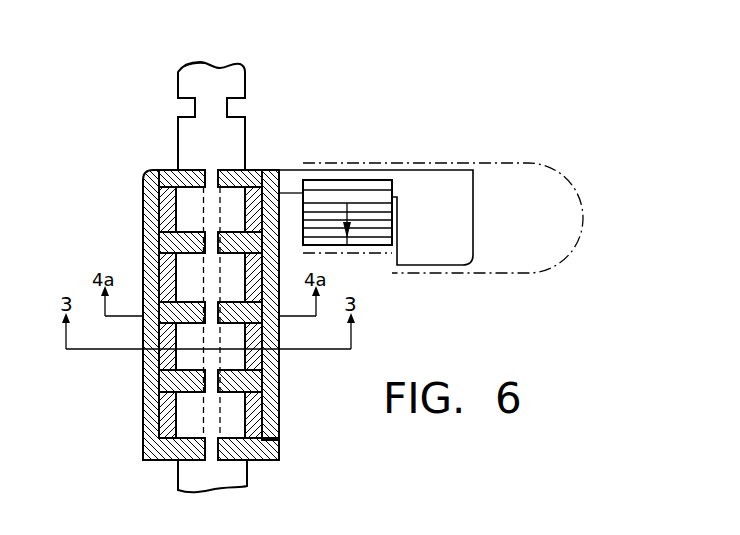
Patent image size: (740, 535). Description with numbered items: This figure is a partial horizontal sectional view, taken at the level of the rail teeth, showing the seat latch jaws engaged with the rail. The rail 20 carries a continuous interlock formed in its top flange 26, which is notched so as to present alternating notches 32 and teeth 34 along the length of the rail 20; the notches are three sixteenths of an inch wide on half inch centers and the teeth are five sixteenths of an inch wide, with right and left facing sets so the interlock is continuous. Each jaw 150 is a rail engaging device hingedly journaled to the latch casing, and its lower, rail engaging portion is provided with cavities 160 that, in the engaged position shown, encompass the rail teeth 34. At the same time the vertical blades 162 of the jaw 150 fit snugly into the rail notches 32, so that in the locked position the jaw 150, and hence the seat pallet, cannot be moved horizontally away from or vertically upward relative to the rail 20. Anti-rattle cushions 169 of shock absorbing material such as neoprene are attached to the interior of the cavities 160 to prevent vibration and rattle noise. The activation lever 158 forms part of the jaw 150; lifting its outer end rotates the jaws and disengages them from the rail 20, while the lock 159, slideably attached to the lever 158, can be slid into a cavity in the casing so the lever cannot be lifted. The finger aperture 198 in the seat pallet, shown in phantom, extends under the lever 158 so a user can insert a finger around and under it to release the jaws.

The rail 20 is at (187, 56).
The top flange 26 is at (232, 62).
The notches 32 is at (182, 107).
The teeth 34 is at (178, 134).
The jaw 150 is at (133, 170).
The activation lever 158 is at (448, 183).
The lock 159 is at (367, 193).
The cavities 160 is at (282, 379).
The vertical blades 162 is at (178, 388).
The anti-rattle cushions 169 is at (167, 213).
The finger aperture 198 is at (555, 192).